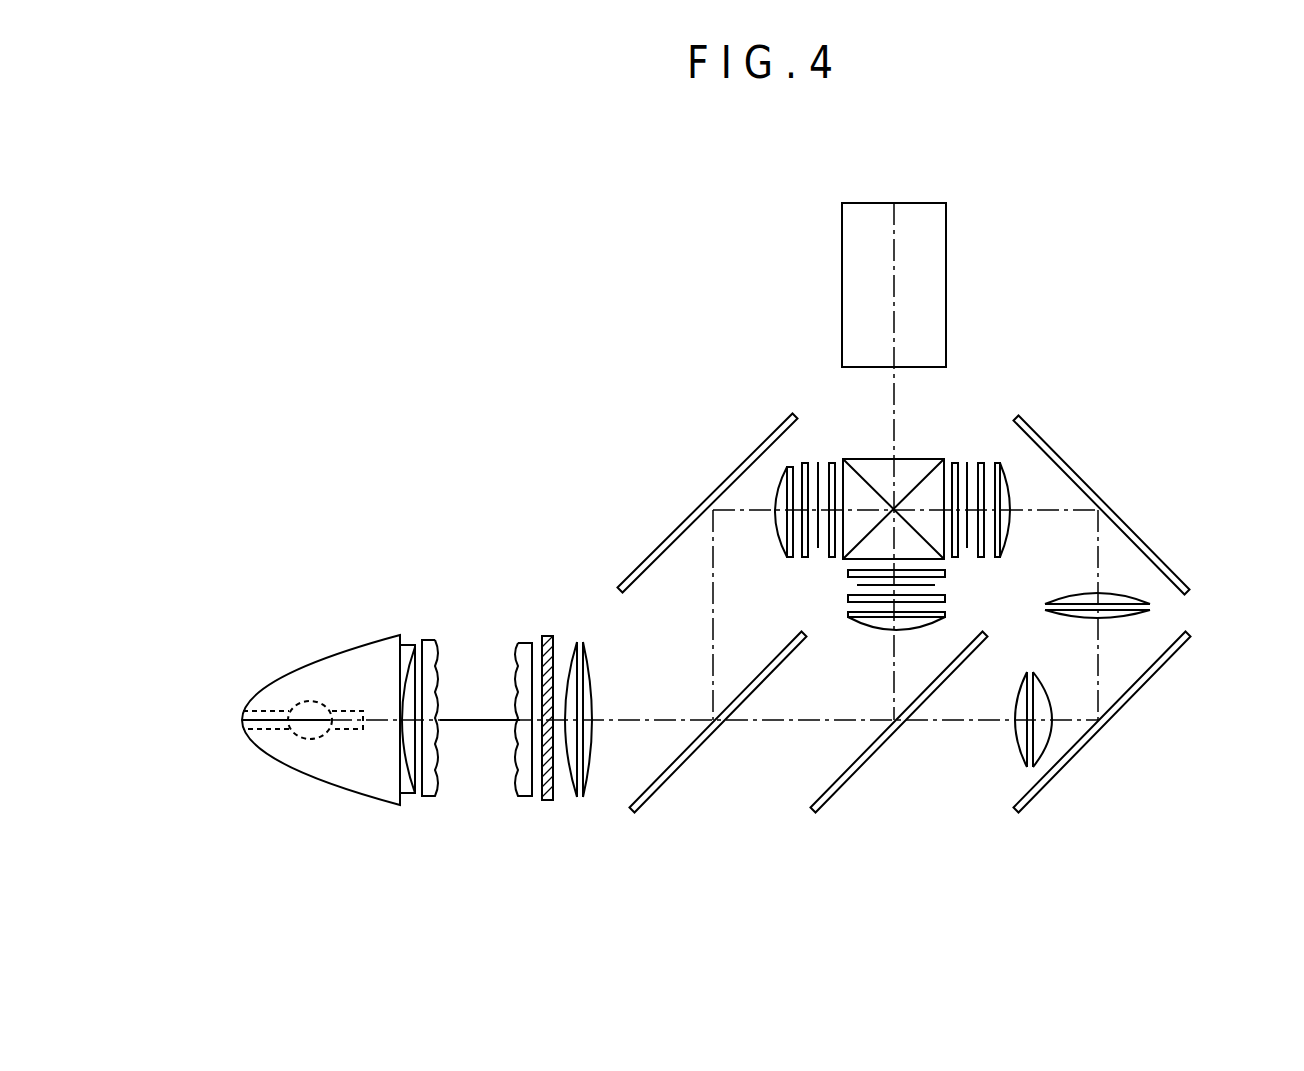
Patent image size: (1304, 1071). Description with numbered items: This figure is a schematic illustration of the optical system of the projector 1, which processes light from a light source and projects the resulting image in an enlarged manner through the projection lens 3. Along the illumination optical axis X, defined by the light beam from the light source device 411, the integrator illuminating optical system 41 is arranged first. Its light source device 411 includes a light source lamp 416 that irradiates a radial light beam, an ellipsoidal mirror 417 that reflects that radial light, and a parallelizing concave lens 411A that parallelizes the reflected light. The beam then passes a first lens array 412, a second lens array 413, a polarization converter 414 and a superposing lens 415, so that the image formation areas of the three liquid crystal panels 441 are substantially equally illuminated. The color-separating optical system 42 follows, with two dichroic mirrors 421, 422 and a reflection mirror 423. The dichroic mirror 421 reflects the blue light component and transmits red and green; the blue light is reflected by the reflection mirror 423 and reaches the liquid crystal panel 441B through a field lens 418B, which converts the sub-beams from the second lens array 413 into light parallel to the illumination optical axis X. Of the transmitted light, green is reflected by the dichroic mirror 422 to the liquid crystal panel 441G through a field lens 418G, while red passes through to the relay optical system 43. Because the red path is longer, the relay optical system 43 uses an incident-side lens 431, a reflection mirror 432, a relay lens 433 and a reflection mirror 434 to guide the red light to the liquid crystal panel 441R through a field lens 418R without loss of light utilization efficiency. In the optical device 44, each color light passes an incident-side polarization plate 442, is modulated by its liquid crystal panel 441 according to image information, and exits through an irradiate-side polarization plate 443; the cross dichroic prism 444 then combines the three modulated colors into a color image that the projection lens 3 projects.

The projector 1 is at (1070, 178).
The projection lens 3 is at (937, 275).
The integrator illuminating optical system 41 is at (316, 585).
The color-separating optical system 42 is at (783, 858).
The relay optical system 43 is at (1218, 480).
The optical device 44 is at (1200, 252).
The light source device 411 is at (198, 773).
The parallelizing concave lens 411A is at (410, 795).
The first lens array 412 is at (427, 797).
The second lens array 413 is at (527, 797).
The polarization converter 414 is at (547, 802).
The superposing lens 415 is at (572, 650).
The light source lamp 416 is at (270, 729).
The ellipsoidal mirror 417 is at (282, 778).
The field lens 418B is at (788, 558).
The field lens 418R is at (998, 557).
The field lens 418G is at (848, 618).
The dichroic mirror 421 is at (653, 790).
The dichroic mirror 422 is at (833, 790).
The reflection mirror 423 is at (660, 543).
The incident-side lens 431 is at (1017, 735).
The reflection mirror 432 is at (1043, 782).
The relay lens 433 is at (1152, 612).
The reflection mirror 434 is at (1155, 550).
The liquid crystal panel 441 is at (912, 488).
The liquid crystal panel for blue light 441B is at (818, 462).
The liquid crystal panel for red light 441R is at (966, 462).
The liquid crystal panel for green light 441G is at (927, 581).
The incident-side polarization plate 442 is at (805, 462).
The irradiate-side polarization plate 443 is at (832, 462).
The cross dichroic prism 444 is at (908, 458).
The illumination optical axis X is at (480, 722).